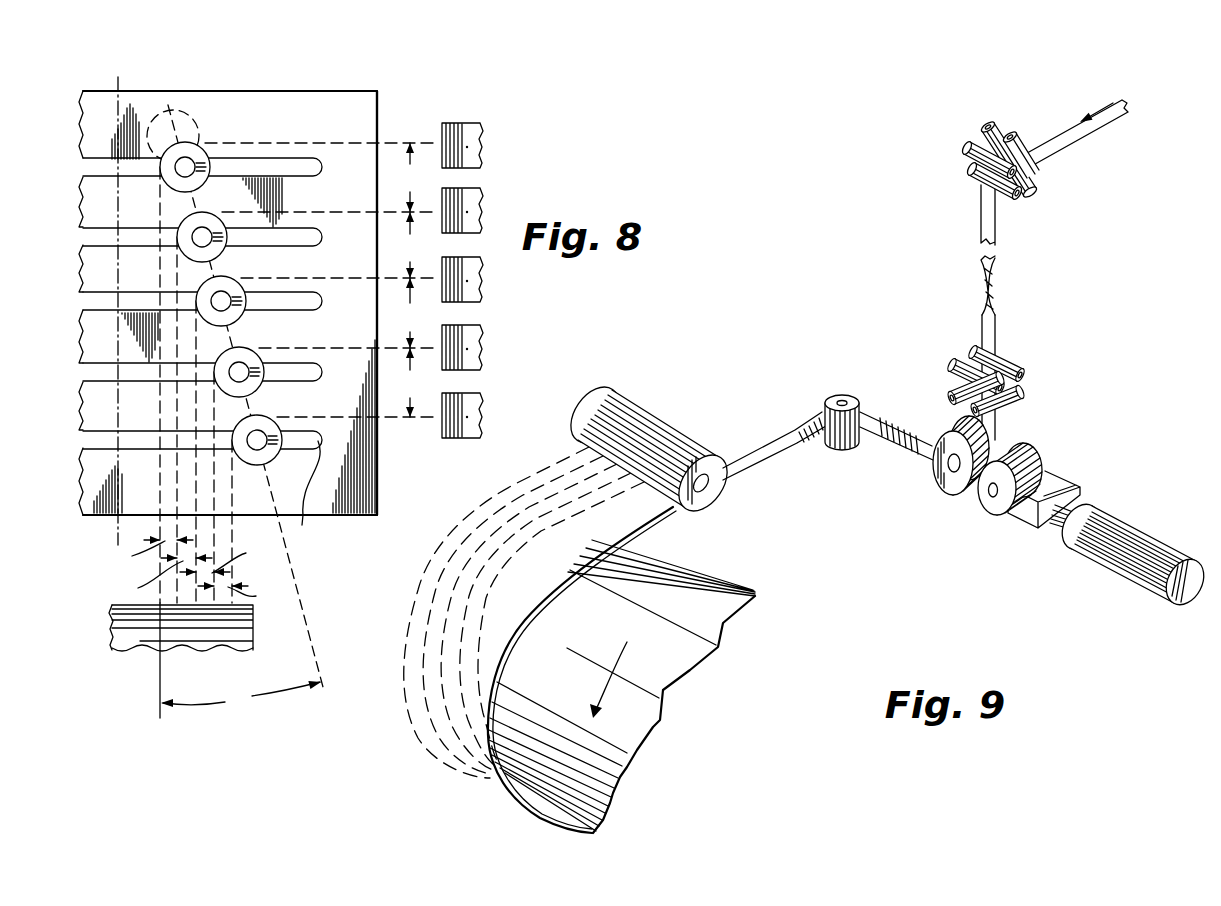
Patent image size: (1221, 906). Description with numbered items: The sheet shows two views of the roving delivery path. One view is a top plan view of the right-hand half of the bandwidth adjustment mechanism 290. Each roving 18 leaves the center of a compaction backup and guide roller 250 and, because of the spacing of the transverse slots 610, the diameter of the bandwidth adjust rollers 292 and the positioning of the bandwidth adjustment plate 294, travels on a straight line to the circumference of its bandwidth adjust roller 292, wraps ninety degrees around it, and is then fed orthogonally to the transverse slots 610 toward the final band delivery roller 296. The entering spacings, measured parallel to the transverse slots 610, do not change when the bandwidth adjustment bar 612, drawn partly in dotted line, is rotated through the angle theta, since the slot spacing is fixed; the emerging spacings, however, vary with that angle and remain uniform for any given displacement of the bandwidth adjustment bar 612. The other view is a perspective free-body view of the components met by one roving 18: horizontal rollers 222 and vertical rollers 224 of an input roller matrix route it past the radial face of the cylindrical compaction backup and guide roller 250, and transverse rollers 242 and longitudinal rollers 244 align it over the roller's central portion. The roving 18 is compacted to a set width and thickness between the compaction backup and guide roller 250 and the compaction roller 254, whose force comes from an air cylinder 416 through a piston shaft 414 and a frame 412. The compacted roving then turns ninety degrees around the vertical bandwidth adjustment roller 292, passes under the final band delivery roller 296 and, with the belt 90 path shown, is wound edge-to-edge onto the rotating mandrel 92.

In FIG. 8, the roving 18 is at (343, 143).
In FIG. 9, the roving 18 is at (1048, 143).
In FIG. 9, the belt 90 is at (665, 518).
In FIG. 9, the mandrel 92 is at (752, 592).
In FIG. 9, the horizontal rollers 222 is at (968, 160).
In FIG. 9, the vertical rollers 224 is at (1008, 128).
In FIG. 9, the transverse rollers 242 is at (1010, 372).
In FIG. 9, the longitudinal rollers 244 is at (950, 405).
In FIG. 8, the compaction backup and guide roller 250 is at (468, 207).
In FIG. 9, the compaction backup and guide roller 250 is at (957, 493).
In FIG. 9, the compaction roller 254 is at (1022, 457).
In FIG. 8, the bandwidth adjustment mechanism 290 is at (390, 107).
In FIG. 8, the bandwidth adjust roller 292 is at (197, 157).
In FIG. 9, the bandwidth adjust roller 292 is at (843, 445).
In FIG. 8, the bandwidth adjustment plate 294 is at (378, 493).
In FIG. 8, the final band delivery roller 296 is at (133, 643).
In FIG. 9, the final band delivery roller 296 is at (724, 496).
In FIG. 9, the frame 412 is at (1068, 490).
In FIG. 9, the piston shaft 414 is at (1068, 527).
In FIG. 9, the air cylinder 416 is at (1135, 531).
In FIG. 8, the transverse slots 610 is at (302, 524).
In FIG. 8, the bandwidth adjustment bar 612 is at (190, 113).